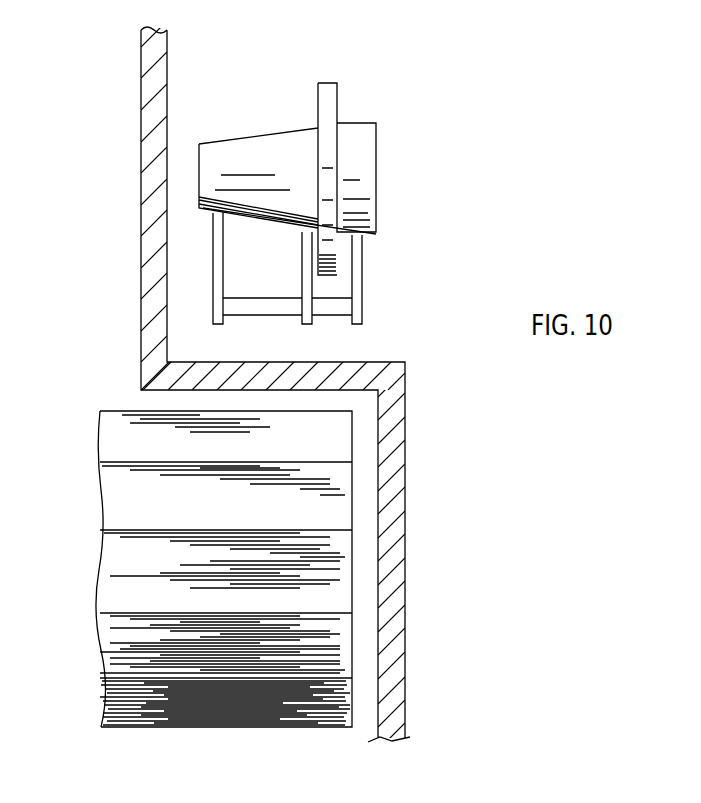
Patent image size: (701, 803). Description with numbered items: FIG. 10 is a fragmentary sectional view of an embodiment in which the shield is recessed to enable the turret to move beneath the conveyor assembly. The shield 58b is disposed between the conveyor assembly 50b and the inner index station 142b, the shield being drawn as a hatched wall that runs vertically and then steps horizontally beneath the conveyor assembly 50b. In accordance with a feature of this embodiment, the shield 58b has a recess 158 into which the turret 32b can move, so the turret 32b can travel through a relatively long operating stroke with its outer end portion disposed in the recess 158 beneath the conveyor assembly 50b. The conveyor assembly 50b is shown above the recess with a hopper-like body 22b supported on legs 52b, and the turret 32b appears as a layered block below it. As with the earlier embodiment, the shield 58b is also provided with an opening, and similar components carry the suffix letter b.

The inner index station 142b is at (72, 126).
The shield 58b is at (152, 176).
The recess 158 is at (366, 484).
The hopper 22b is at (391, 174).
The conveyor assembly 50b is at (380, 246).
The leg 52b is at (362, 284).
The turret 32b is at (366, 563).